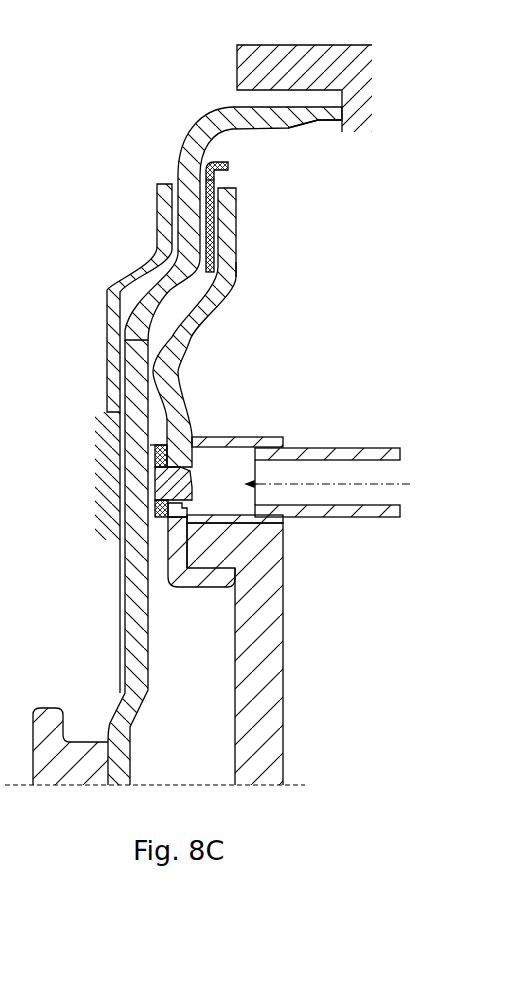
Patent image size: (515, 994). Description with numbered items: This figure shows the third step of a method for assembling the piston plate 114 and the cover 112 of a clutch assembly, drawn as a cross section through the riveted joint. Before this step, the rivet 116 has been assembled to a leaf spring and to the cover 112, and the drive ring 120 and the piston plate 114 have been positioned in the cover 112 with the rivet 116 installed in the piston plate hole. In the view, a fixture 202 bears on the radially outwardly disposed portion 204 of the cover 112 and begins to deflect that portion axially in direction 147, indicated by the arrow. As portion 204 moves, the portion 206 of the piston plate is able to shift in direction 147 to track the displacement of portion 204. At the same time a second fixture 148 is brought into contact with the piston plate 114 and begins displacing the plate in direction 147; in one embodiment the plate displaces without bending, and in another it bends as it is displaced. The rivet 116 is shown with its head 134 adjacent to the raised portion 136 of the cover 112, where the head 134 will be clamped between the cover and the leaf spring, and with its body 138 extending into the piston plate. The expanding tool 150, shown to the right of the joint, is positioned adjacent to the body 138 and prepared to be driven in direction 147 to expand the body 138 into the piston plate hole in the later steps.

The cover 112 is at (228, 107).
The piston plate 114 is at (237, 272).
The rivet 116 is at (195, 488).
The drive ring 120 is at (228, 168).
The head 134 is at (150, 515).
The raised portion 136 is at (126, 452).
The body 138 is at (190, 440).
The direction 147 is at (425, 610).
The fixture 148 is at (284, 700).
The expanding tool 150 is at (336, 447).
The fixture 202 is at (373, 83).
The radially outwardly disposed portion 204 is at (317, 122).
The portion 206 is at (238, 200).